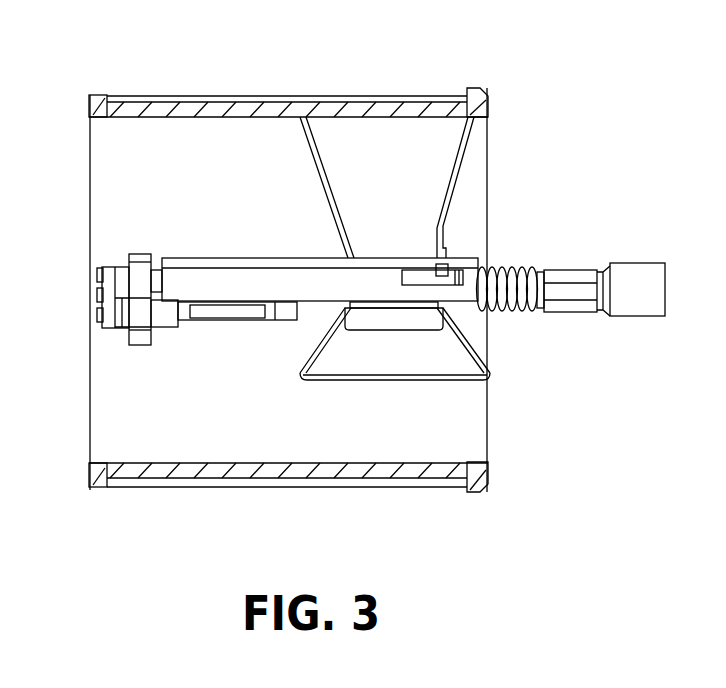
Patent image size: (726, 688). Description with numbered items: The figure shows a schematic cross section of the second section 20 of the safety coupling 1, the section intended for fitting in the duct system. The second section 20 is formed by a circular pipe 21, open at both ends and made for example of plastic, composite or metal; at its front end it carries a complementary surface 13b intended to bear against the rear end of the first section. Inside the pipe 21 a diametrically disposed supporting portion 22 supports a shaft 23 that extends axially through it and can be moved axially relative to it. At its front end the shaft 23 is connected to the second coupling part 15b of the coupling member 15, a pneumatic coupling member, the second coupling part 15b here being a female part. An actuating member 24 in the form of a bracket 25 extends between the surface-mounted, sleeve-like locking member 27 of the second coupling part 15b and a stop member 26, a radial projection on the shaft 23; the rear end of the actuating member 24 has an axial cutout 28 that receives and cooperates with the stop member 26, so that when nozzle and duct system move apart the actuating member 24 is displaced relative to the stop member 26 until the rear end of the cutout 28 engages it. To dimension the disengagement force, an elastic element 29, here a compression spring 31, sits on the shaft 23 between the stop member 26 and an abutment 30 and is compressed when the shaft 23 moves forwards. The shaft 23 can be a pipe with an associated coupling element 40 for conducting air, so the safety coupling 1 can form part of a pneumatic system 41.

The safety coupling 1 is at (213, 82).
The complementary surface 13b is at (98, 488).
The coupling member 15 is at (86, 230).
The second coupling part 15b is at (105, 322).
The second section 20 is at (353, 84).
The circular pipe 21 is at (152, 96).
The supporting portion 22 is at (435, 157).
The shaft 23 is at (296, 318).
The actuating member 24 is at (237, 272).
The bracket 25 is at (293, 272).
The stop member 26 is at (447, 262).
The locking member 27 is at (147, 258).
The axial cutout 28 is at (423, 268).
The elastic element 29 is at (510, 312).
The abutment 30 is at (567, 272).
The compression spring 31 is at (535, 312).
The coupling element 40 is at (607, 270).
The pneumatic system 41 is at (643, 283).